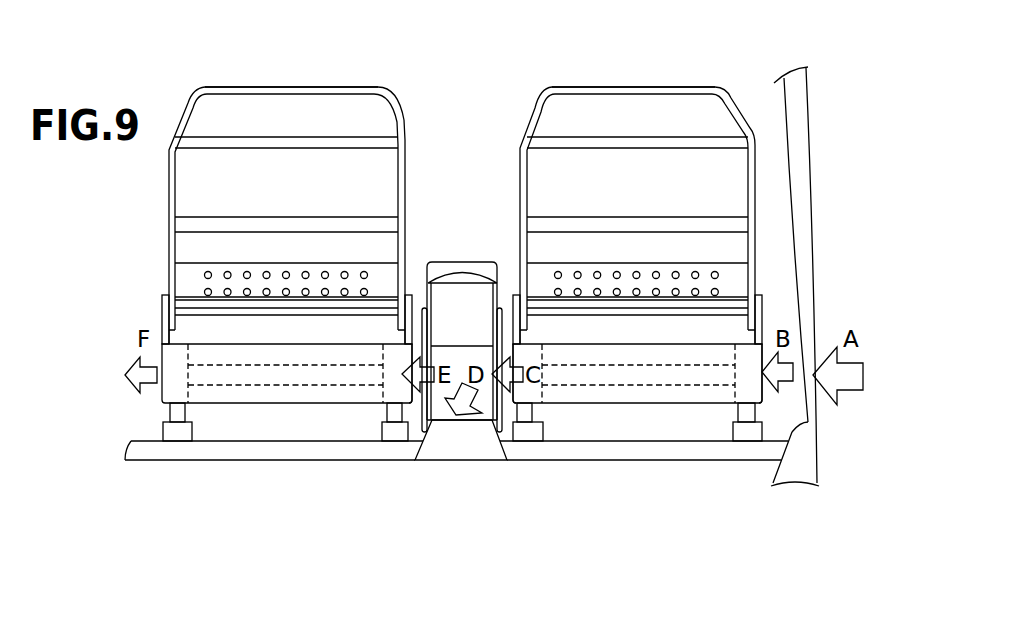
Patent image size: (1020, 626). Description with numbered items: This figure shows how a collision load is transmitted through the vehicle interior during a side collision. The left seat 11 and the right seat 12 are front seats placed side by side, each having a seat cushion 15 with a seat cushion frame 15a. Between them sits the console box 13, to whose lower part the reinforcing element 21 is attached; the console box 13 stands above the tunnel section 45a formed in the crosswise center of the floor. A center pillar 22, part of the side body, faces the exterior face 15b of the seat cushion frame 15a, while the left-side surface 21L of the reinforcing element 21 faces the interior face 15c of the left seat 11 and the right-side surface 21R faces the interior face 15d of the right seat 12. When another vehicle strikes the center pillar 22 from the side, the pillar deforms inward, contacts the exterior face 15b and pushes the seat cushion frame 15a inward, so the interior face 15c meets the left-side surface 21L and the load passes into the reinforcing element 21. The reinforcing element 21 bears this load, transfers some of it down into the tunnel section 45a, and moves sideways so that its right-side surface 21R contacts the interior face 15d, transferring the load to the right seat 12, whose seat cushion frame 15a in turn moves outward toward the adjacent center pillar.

The left seat 11 is at (669, 84).
The right seat 12 is at (221, 84).
The console box 13 is at (453, 277).
The seat cushion 15 is at (277, 413).
The seat cushion frame 15a is at (273, 87).
The exterior face 15b is at (762, 398).
The interior face 15c is at (507, 397).
The interior face 15d is at (420, 391).
The reinforcing element 21 is at (442, 411).
The right-side surface 21R is at (424, 432).
The left-side surface 21L is at (500, 432).
The center pillar 22 is at (810, 190).
The tunnel section 45a is at (477, 424).